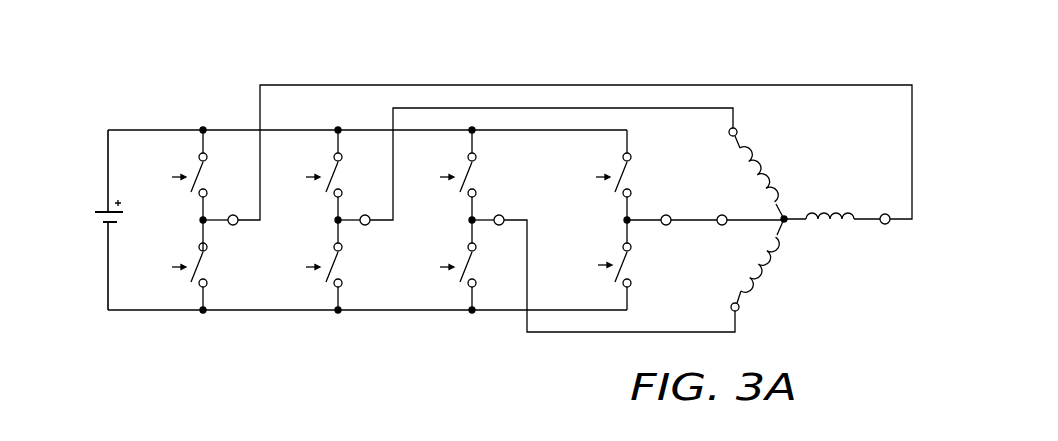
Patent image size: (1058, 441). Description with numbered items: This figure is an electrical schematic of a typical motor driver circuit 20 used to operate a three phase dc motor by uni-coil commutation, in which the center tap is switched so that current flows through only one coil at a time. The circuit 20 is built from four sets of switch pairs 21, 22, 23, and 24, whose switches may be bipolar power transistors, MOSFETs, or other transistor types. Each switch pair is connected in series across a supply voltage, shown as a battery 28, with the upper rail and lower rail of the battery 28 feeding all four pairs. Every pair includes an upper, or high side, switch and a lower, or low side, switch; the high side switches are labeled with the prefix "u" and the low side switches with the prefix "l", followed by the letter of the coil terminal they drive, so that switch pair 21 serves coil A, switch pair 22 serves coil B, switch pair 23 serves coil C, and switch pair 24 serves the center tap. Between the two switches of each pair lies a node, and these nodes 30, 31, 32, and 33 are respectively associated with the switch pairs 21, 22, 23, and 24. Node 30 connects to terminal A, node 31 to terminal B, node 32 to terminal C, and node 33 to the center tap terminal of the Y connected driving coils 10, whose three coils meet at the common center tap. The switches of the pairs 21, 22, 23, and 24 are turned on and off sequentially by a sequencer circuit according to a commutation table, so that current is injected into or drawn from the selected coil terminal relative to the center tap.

The Y connected coil configuration 10 is at (871, 250).
The circuit 20 is at (710, 78).
The switch pair 21 is at (230, 324).
The switch pair 22 is at (363, 324).
The switch pair 23 is at (497, 324).
The switch pair 24 is at (645, 270).
The battery 28 is at (98, 211).
The node 30 is at (199, 221).
The node 31 is at (334, 221).
The node 32 is at (468, 221).
The node 33 is at (623, 221).